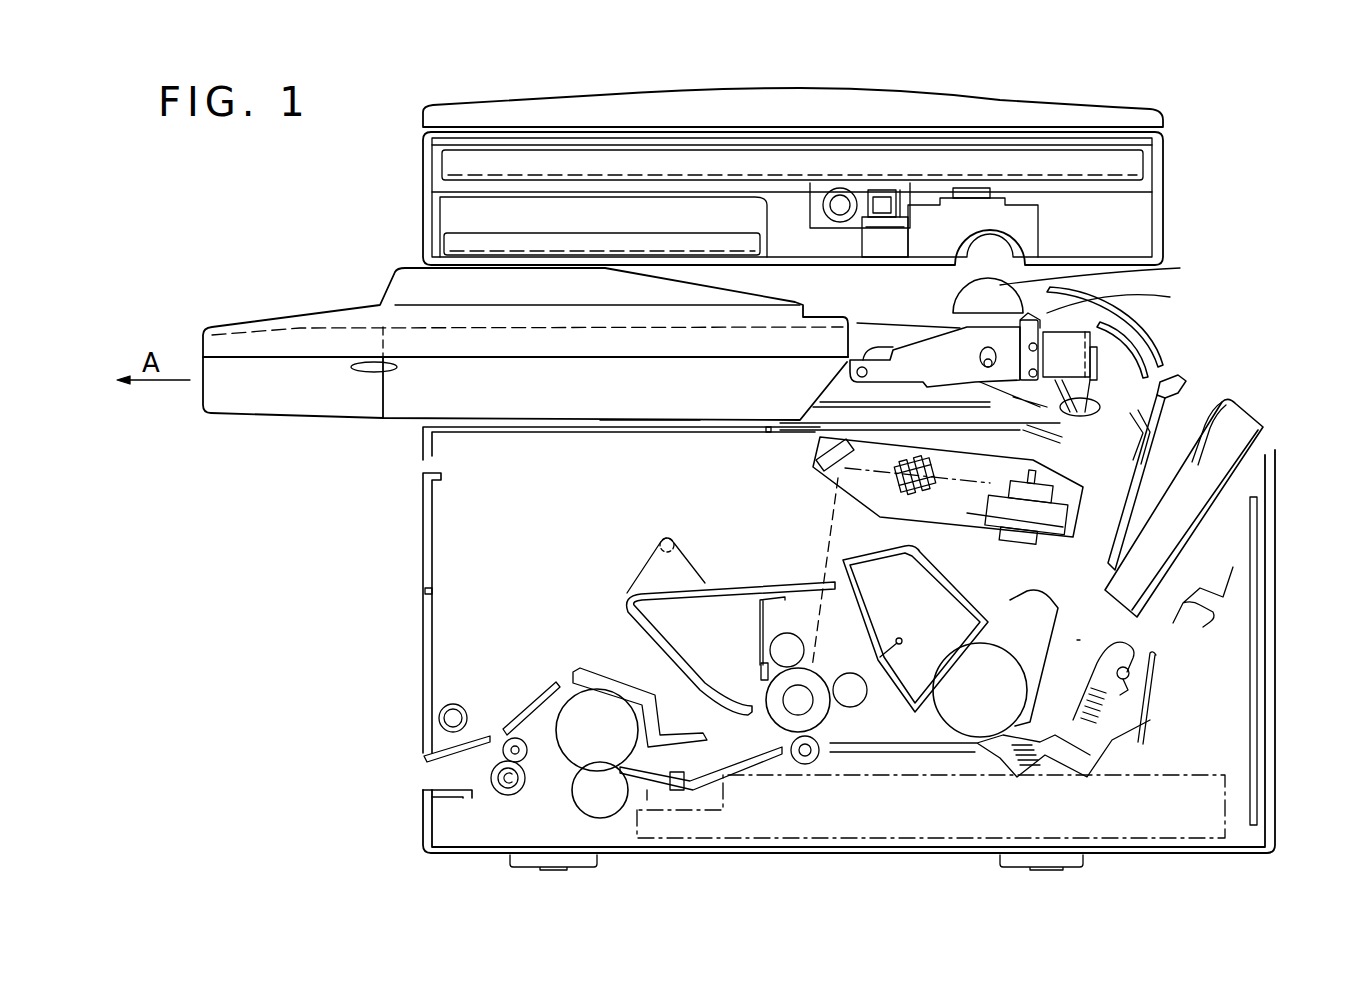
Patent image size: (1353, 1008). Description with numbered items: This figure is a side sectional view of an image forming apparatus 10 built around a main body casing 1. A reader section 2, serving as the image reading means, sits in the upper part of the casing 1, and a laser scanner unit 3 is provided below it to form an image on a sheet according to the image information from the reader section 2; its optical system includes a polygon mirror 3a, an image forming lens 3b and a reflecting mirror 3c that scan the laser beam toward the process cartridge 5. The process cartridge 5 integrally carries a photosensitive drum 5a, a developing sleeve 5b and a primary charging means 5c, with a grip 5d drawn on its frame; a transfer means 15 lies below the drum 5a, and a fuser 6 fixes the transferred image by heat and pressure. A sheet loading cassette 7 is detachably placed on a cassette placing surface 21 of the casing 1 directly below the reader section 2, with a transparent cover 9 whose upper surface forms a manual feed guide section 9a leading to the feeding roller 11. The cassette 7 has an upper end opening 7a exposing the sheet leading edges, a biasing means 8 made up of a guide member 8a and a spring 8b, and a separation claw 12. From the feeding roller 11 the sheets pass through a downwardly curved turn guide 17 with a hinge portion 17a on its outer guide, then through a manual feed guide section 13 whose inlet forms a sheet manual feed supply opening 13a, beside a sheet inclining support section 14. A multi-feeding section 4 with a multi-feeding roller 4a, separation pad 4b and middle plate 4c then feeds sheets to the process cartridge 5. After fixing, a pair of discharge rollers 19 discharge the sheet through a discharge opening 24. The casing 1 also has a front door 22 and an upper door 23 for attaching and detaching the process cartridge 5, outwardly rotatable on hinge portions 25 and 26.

The main body casing 1 is at (1270, 483).
The reader section 2 is at (1140, 195).
The laser scanner unit 3 is at (1063, 490).
The polygon mirror 3a is at (1060, 517).
The image forming lens 3b is at (927, 490).
The reflecting mirror 3c is at (820, 477).
The multi-feeding section 4 is at (1090, 637).
The multi-feeding roller 4a is at (977, 722).
The separation pad 4b is at (1003, 760).
The middle plate 4c is at (1077, 640).
The process cartridge 5 is at (628, 625).
The photosensitive drum 5a is at (783, 687).
The developing sleeve 5b is at (850, 680).
The primary charging means 5c is at (773, 647).
The cartridge grip 5d is at (662, 540).
The fuser 6 is at (610, 803).
The sheet loading cassette 7 is at (248, 400).
The upper end opening 7a is at (970, 328).
The biasing means 8 is at (910, 353).
The guide member 8a is at (943, 375).
The spring 8b is at (1013, 397).
The cover 9 is at (305, 337).
The manual feed guide section 9a is at (407, 280).
The image forming apparatus 10 is at (896, 899).
The feeding roller 11 is at (1109, 269).
The separation claw 12 is at (1125, 298).
The manual feed guide section 13 is at (1180, 377).
The sheet manual feed supply opening 13a is at (1157, 378).
The sheet inclining support section 14 is at (1260, 423).
The transfer means 15 is at (805, 765).
The turn guide 17 is at (1148, 367).
The hinge portion 17a is at (1140, 318).
The pair of discharge rollers 19 is at (492, 770).
The cassette placing surface 21 is at (663, 428).
The front door 22 is at (421, 513).
The upper door 23 is at (423, 448).
The discharge opening 24 is at (423, 790).
The hinge portion 25 is at (423, 590).
The hinge portion 26 is at (767, 433).